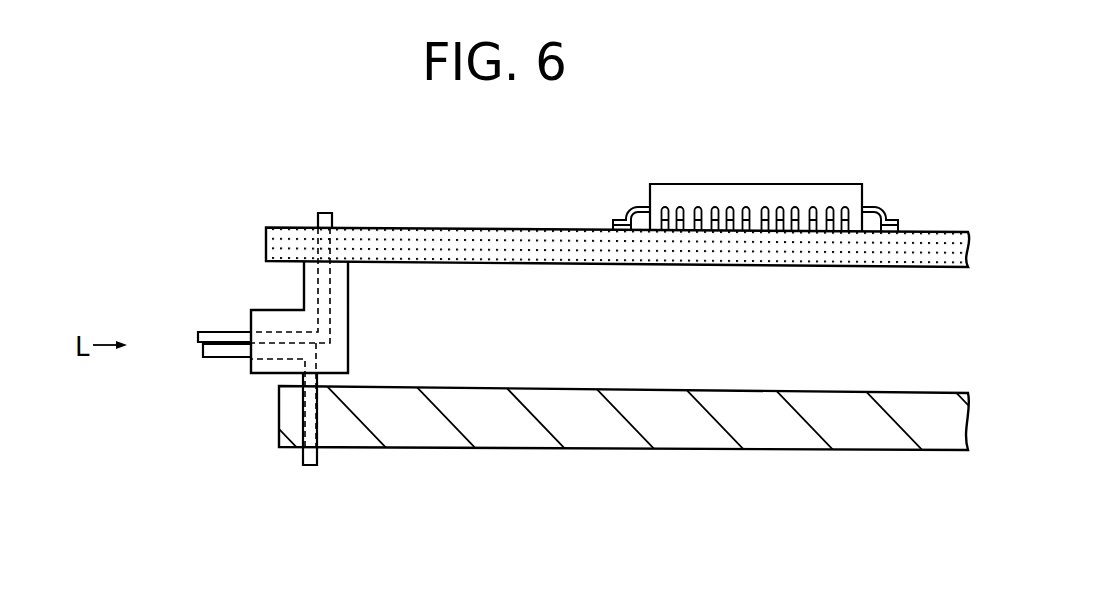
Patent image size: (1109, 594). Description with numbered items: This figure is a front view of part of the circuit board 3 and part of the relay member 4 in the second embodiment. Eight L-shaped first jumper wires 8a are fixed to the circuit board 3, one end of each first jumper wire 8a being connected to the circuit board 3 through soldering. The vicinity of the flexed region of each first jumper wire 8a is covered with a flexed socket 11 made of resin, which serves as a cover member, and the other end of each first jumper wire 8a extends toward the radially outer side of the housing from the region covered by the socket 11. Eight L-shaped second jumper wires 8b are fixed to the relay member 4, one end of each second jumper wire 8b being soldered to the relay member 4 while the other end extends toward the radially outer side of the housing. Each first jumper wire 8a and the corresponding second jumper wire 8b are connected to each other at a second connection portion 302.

The circuit board 3 is at (957, 258).
The relay member 4 is at (955, 446).
The socket 11 is at (262, 310).
The first jumper wire 8a is at (212, 332).
The second jumper wire 8b is at (208, 360).
The second connection portion 302 is at (192, 348).